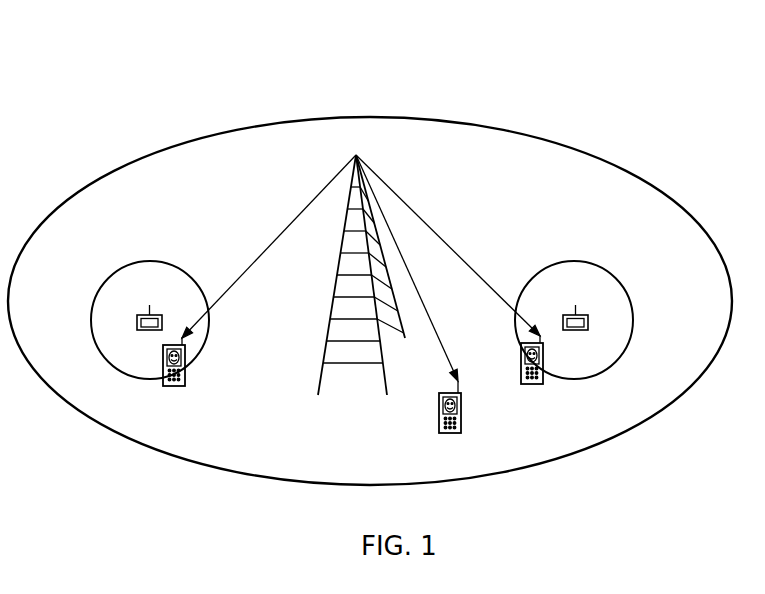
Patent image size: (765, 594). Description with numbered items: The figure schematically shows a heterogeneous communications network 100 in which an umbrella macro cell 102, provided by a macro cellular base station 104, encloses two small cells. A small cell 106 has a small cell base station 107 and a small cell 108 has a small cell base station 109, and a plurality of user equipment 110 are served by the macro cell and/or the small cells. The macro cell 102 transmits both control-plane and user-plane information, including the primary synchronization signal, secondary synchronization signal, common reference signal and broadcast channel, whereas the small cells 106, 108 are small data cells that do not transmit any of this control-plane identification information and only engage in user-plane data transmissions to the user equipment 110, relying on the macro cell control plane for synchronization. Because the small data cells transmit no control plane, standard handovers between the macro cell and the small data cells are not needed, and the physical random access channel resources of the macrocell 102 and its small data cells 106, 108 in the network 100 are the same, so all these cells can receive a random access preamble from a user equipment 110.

The network 100 is at (110, 56).
The macro cell 102 is at (614, 166).
The macro cellular base station 104 is at (319, 385).
The small cell 106 is at (91, 316).
The small cell base station 107 is at (137, 322).
The small cell 108 is at (625, 350).
The small cell base station 109 is at (588, 322).
The user equipment 110 is at (185, 358).